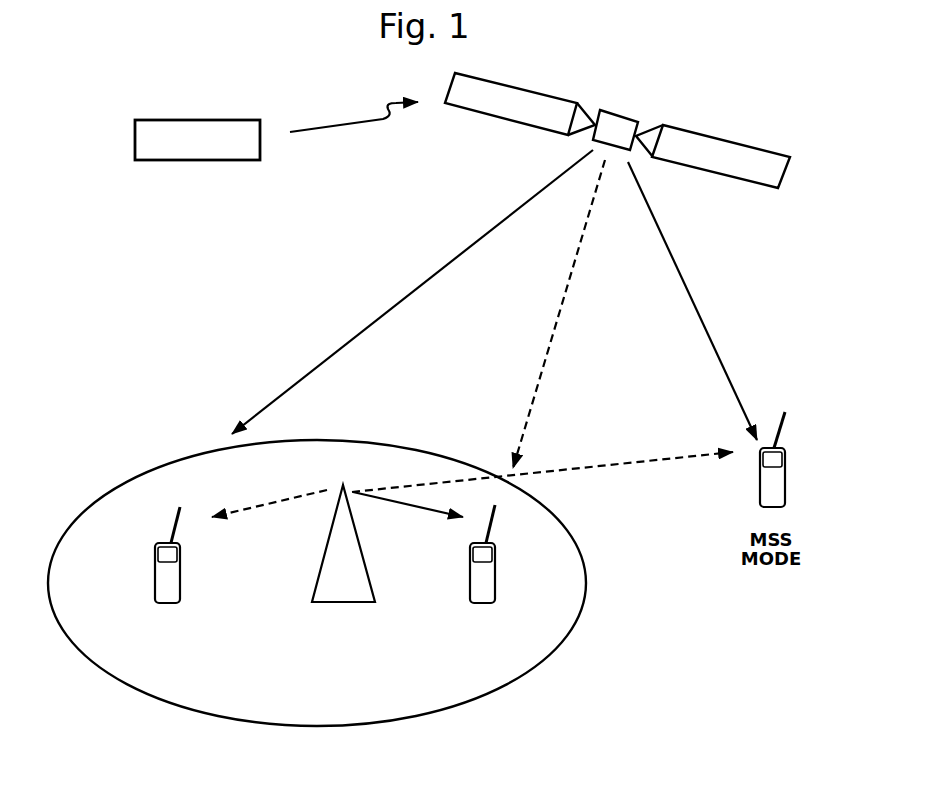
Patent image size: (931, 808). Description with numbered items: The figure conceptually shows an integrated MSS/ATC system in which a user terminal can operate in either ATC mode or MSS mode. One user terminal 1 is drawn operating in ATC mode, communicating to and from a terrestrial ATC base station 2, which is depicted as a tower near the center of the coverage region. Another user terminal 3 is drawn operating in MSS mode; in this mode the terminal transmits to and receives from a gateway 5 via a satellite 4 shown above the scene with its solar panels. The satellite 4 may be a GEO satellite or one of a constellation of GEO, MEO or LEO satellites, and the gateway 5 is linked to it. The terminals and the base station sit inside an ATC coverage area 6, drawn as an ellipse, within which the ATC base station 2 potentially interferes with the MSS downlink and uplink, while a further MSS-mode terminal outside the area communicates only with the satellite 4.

The user terminal 1 is at (470, 556).
The ATC base station 2 is at (323, 556).
The user terminal 3 is at (155, 556).
The satellite 4 is at (621, 116).
The gateway 5 is at (135, 126).
The ATC coverage area 6 is at (442, 456).